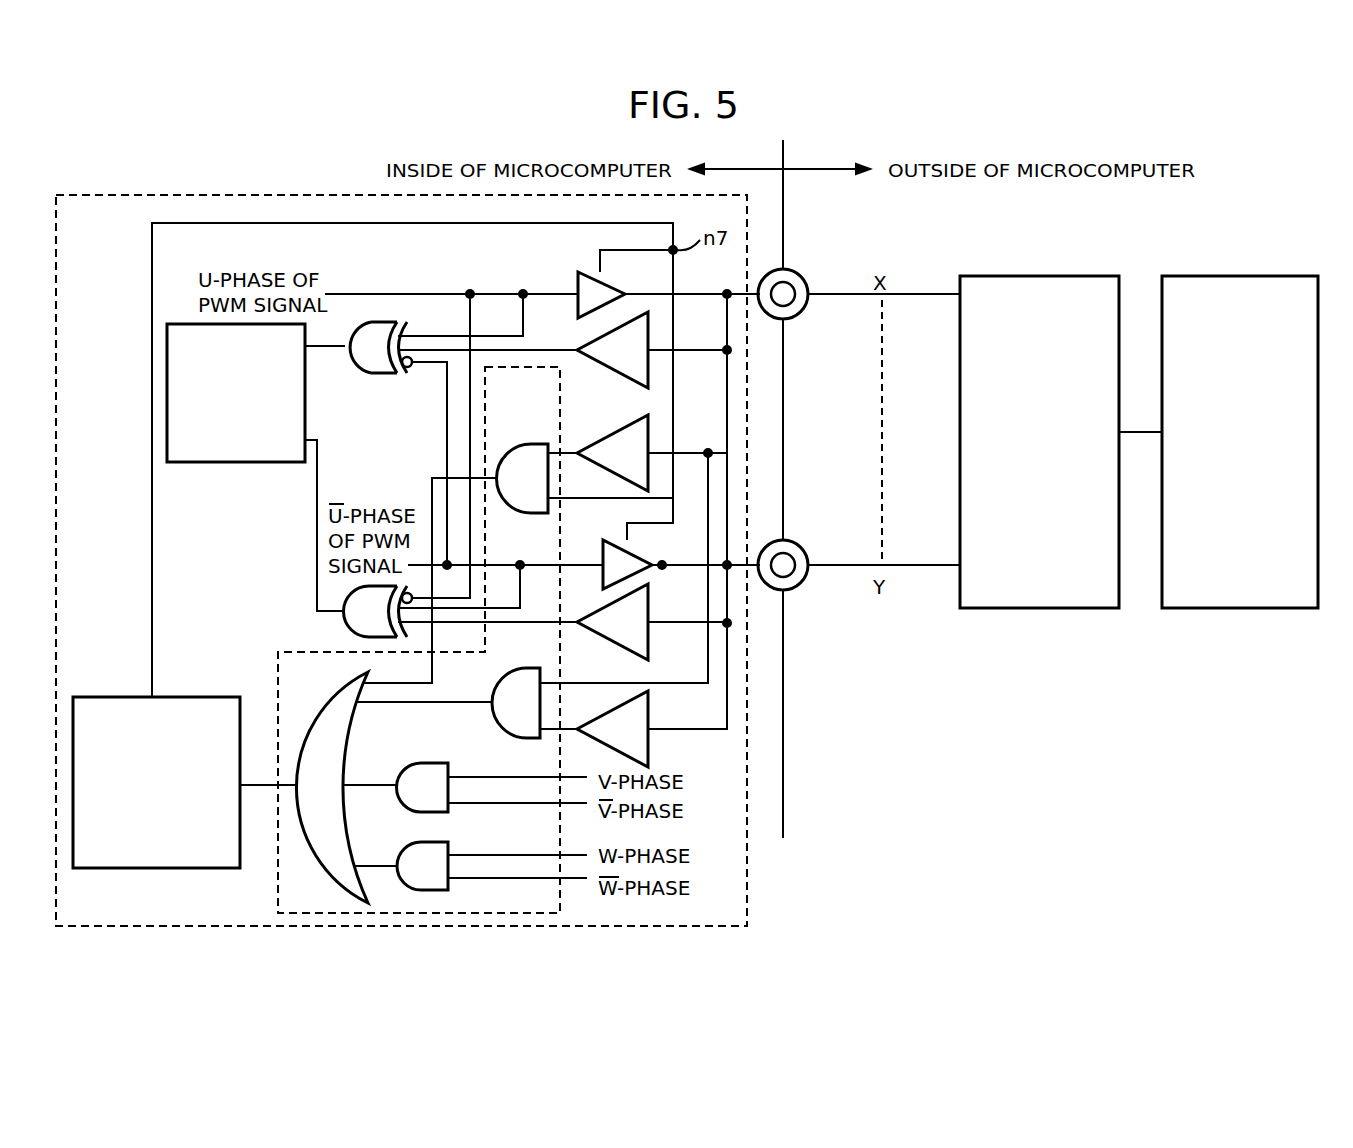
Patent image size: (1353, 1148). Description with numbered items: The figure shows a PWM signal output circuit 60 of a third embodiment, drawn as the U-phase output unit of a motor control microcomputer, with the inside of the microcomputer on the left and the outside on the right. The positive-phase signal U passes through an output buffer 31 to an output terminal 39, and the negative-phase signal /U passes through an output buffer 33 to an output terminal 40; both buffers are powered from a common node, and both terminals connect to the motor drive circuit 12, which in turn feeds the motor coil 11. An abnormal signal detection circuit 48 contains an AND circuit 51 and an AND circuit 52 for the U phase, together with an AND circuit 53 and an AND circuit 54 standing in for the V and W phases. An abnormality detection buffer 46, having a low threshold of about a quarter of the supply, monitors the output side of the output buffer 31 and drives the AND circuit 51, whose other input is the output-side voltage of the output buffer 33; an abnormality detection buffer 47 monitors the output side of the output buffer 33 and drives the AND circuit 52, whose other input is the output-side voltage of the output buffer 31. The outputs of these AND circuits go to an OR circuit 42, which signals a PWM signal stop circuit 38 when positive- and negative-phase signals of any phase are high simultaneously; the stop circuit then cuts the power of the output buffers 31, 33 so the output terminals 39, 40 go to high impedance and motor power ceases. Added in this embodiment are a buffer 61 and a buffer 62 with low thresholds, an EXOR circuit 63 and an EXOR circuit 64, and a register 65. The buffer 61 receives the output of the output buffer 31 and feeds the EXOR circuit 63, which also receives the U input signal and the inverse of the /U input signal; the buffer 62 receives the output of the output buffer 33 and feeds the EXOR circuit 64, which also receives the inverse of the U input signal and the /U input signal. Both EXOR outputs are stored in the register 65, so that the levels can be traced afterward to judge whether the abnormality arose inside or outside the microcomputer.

The motor coil 11 is at (1250, 276).
The motor drive circuit 12 is at (1040, 276).
The output buffer 31 is at (577, 278).
The output buffer 33 is at (642, 556).
The PWM signal stop circuit 38 is at (193, 868).
The output terminal 39 is at (800, 276).
The output terminal 40 is at (800, 547).
The OR circuit 42 is at (313, 712).
The abnormality detection buffer 46 is at (648, 427).
The abnormality detection buffer 47 is at (650, 745).
The abnormal signal detection circuit 48 is at (277, 678).
The AND circuit 51 is at (515, 444).
The AND circuit 52 is at (526, 668).
The AND circuit 53 is at (403, 766).
The AND circuit 54 is at (403, 846).
The PWM signal output circuit 60 is at (748, 872).
The buffer 61 is at (648, 326).
The buffer 62 is at (650, 640).
The EXOR circuit 63 is at (385, 373).
The EXOR circuit 64 is at (343, 615).
The register 65 is at (305, 398).